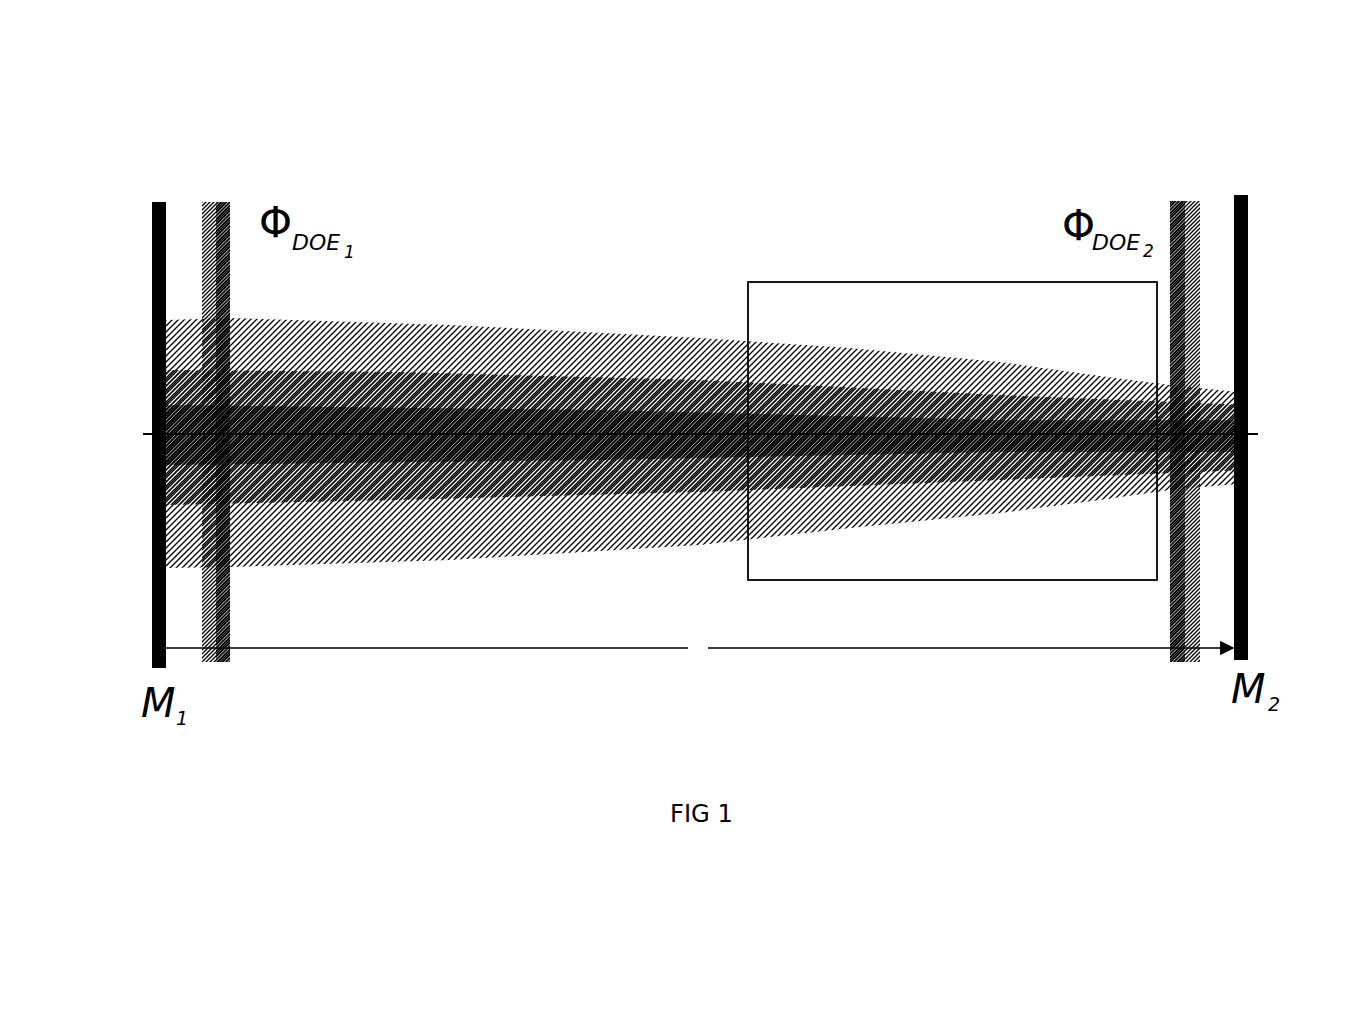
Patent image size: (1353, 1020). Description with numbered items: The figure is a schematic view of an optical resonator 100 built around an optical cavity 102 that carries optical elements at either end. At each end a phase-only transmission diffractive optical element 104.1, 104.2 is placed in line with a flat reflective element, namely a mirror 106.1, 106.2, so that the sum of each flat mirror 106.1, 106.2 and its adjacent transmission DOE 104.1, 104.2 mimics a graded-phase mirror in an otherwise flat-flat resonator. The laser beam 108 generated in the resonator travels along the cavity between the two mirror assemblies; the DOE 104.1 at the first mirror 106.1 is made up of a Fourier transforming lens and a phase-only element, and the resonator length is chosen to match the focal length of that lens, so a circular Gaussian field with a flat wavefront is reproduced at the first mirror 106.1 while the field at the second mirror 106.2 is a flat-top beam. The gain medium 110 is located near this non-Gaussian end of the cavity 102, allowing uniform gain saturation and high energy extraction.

The optical resonator 100 is at (567, 114).
The optical cavity 102 is at (719, 253).
The diffractive optical element 104.1 is at (230, 281).
The diffractive optical element 104.2 is at (1172, 310).
The mirror 106.1 is at (152, 249).
The mirror 106.2 is at (1248, 252).
The laser beam 108 is at (693, 428).
The gain medium 110 is at (960, 282).